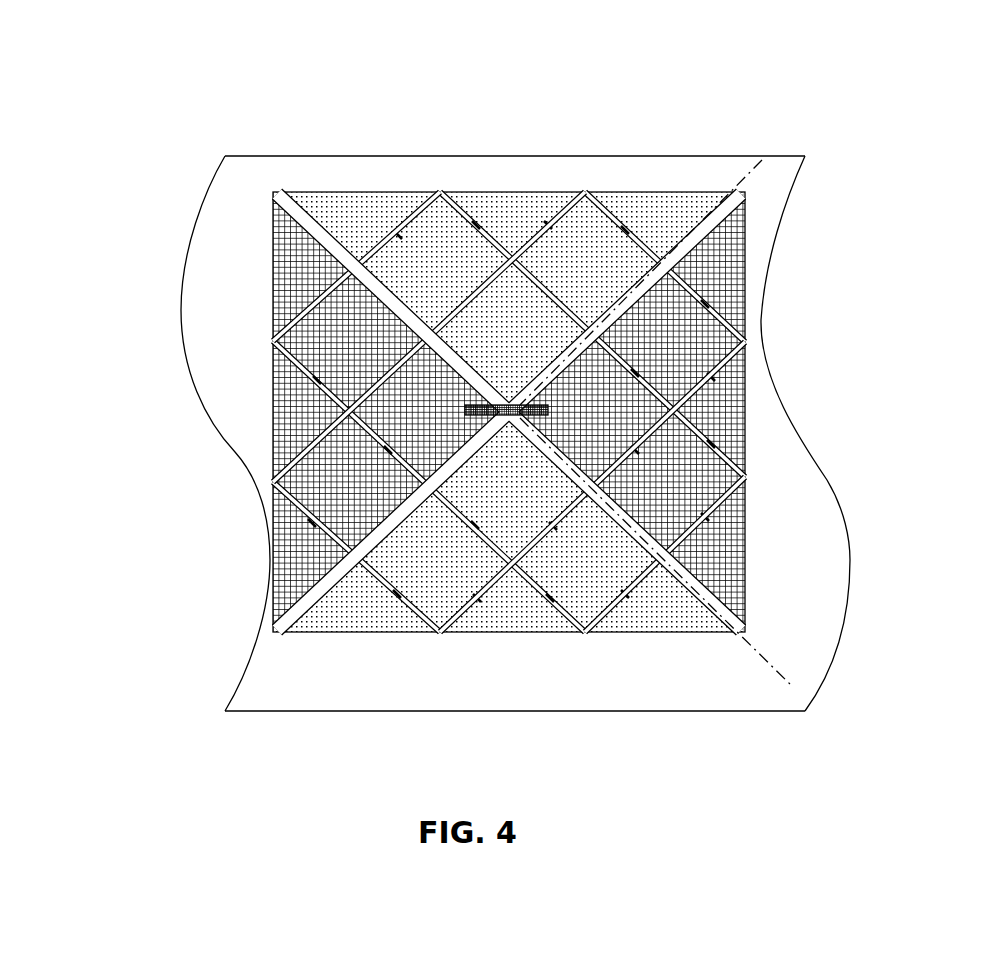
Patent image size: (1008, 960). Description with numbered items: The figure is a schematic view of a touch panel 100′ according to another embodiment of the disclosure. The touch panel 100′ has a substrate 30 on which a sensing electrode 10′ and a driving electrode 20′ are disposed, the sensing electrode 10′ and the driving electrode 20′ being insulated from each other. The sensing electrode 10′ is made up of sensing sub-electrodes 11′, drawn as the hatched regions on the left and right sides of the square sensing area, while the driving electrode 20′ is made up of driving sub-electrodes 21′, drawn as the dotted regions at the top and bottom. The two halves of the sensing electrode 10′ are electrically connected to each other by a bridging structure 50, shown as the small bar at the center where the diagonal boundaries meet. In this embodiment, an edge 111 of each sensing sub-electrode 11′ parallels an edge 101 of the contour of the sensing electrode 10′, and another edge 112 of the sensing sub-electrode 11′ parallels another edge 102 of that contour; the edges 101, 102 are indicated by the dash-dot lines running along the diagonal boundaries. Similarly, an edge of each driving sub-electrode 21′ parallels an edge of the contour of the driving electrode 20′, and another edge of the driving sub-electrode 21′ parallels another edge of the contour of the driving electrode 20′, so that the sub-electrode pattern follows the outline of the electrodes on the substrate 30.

The touch panel 100′ is at (464, 391).
The substrate 30 is at (242, 678).
The sensing electrode 10′ is at (374, 412).
The sensing sub-electrode 11′ is at (273, 291).
The driving electrode 20′ is at (509, 319).
The driving sub-electrode 21′ is at (388, 190).
The edge of sensing sub-electrode 111 is at (748, 343).
The another edge of sensing sub-electrode 112 is at (693, 425).
The edge of contour of sensing electrode 101 is at (743, 187).
The another edge of contour of sensing electrode 102 is at (745, 637).
The bridging structure 50 is at (503, 417).